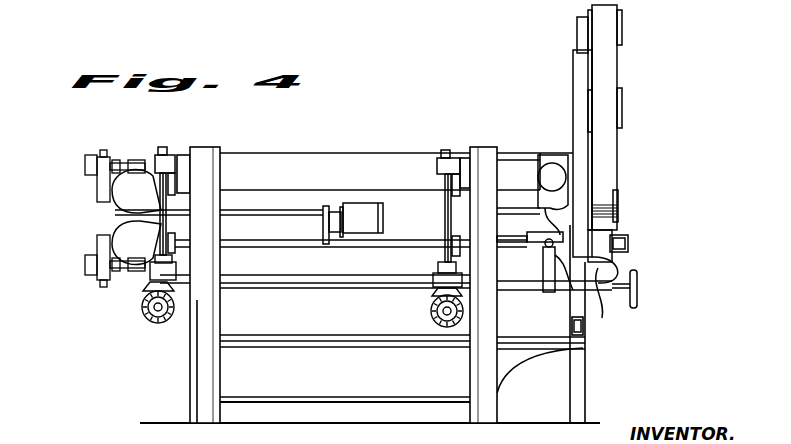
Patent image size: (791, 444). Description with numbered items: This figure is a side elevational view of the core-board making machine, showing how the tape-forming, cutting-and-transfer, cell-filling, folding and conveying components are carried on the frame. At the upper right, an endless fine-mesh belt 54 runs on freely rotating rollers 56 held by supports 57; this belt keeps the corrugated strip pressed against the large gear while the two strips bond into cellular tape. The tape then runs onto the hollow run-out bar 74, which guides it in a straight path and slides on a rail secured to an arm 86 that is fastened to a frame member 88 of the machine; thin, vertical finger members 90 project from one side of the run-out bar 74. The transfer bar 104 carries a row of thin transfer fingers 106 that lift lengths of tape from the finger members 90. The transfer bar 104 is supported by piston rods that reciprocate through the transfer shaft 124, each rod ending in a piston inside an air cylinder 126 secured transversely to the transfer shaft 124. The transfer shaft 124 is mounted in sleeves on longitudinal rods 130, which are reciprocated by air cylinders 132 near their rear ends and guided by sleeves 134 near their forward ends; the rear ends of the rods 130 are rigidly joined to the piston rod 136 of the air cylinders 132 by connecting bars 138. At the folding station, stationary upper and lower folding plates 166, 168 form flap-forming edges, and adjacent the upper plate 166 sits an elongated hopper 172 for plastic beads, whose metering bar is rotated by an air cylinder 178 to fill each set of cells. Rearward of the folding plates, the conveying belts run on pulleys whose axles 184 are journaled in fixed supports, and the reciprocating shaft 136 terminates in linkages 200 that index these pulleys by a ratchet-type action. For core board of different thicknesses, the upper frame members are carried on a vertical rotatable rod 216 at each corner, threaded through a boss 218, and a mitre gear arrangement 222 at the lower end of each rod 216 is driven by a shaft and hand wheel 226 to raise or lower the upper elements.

The endless fine-mesh belt 54 is at (612, 61).
The rollers 56 is at (623, 28).
The supports 57 is at (573, 75).
The run-out bar 74 is at (630, 244).
The arm 86 is at (609, 303).
The frame member 88 is at (220, 312).
The finger members 90 is at (624, 267).
The transfer bar 104 is at (560, 295).
The transfer fingers 106 is at (622, 212).
The transfer shaft 124 is at (543, 292).
The air cylinder 126 is at (542, 327).
The rods 130 is at (395, 246).
The air cylinders 132 is at (395, 184).
The sleeves 134 is at (540, 253).
The piston rod 136 is at (296, 213).
The connecting bars 138 is at (320, 236).
The upper folding plate 166 is at (527, 212).
The lower folding plate 168 is at (527, 241).
The hopper 172 is at (548, 154).
The air cylinder 178 is at (557, 153).
The axles 184 is at (85, 163).
The linkages 200 is at (113, 213).
The vertical rotatable rod 216 is at (168, 148).
The boss 218 is at (158, 151).
The mitre gear arrangement 222 is at (138, 304).
The hand wheel 226 is at (637, 302).